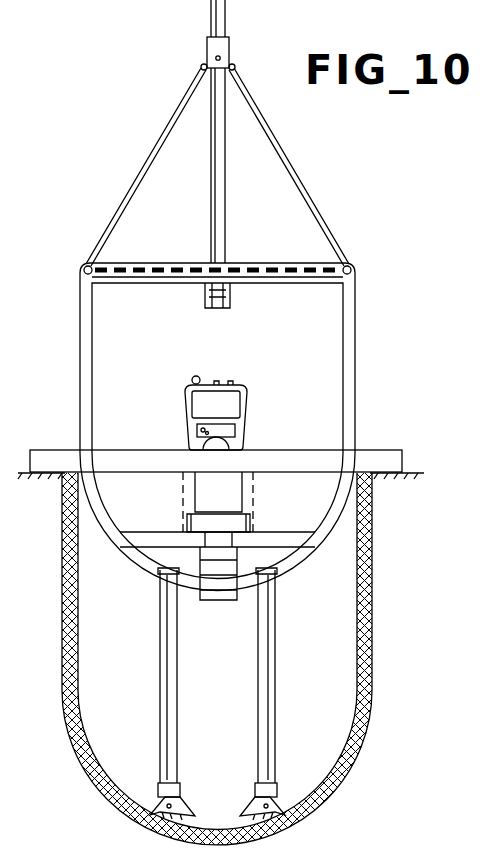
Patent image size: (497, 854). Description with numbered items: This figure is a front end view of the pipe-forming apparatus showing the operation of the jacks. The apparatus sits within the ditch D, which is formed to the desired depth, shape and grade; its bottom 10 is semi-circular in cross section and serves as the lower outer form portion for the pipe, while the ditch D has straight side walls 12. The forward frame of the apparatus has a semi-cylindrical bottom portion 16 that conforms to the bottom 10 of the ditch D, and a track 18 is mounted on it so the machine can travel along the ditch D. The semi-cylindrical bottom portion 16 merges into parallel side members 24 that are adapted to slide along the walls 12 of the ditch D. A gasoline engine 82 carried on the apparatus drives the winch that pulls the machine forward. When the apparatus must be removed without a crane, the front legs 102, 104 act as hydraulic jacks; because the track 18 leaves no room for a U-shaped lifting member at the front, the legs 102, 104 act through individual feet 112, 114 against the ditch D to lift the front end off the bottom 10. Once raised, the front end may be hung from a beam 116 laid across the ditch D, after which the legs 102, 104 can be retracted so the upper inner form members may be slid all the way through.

The bottom of the ditch 10 is at (104, 771).
The side walls 12 is at (72, 597).
The semi-cylindrical bottom portion 16 is at (305, 571).
The track 18 is at (222, 602).
The side members 24 is at (80, 348).
The gasoline engine 82 is at (238, 405).
The leg 102 is at (162, 672).
The leg 104 is at (272, 672).
The foot 112 is at (152, 813).
The foot 114 is at (280, 815).
The beam 116 is at (368, 463).
The ditch D is at (346, 789).